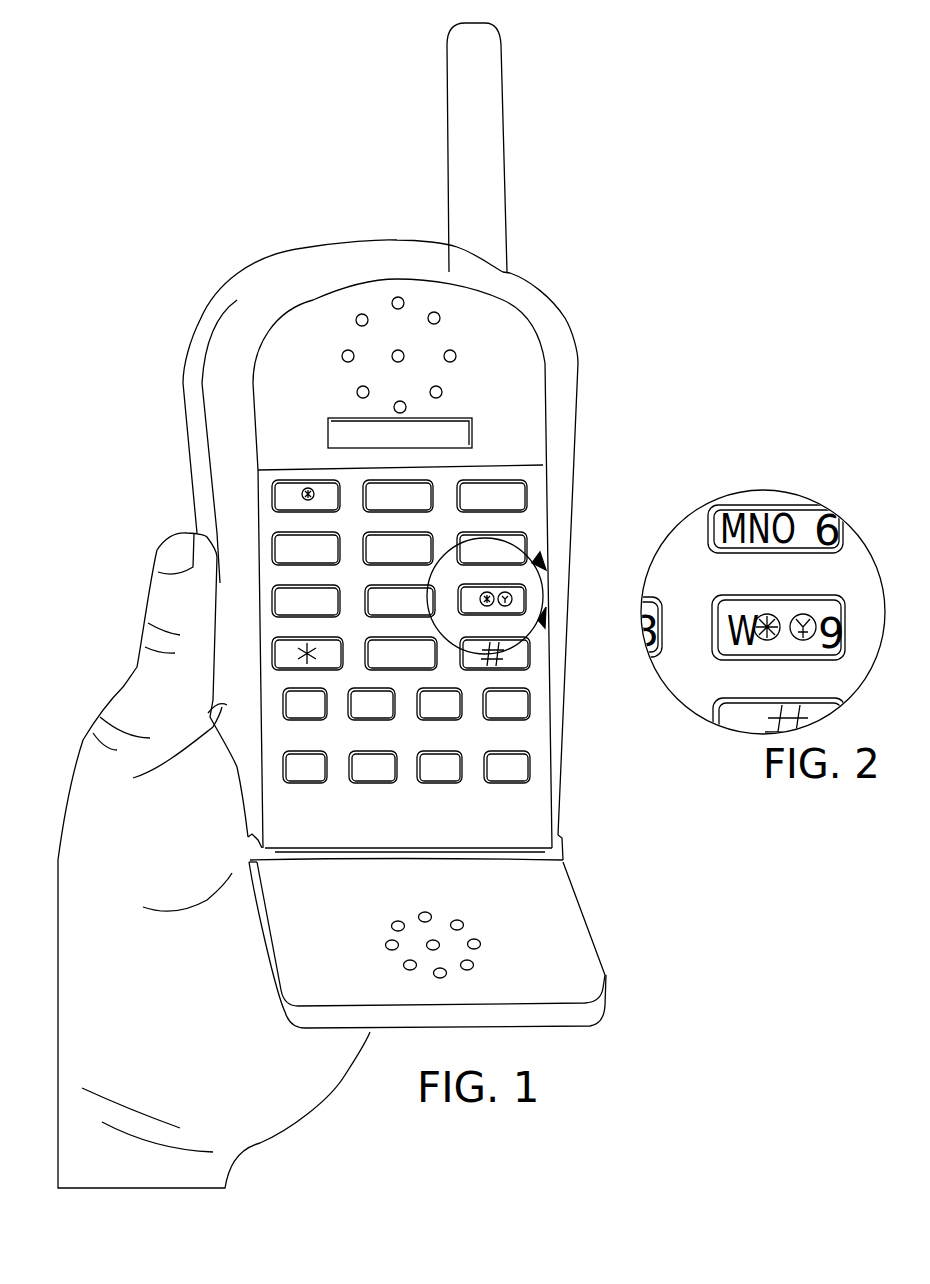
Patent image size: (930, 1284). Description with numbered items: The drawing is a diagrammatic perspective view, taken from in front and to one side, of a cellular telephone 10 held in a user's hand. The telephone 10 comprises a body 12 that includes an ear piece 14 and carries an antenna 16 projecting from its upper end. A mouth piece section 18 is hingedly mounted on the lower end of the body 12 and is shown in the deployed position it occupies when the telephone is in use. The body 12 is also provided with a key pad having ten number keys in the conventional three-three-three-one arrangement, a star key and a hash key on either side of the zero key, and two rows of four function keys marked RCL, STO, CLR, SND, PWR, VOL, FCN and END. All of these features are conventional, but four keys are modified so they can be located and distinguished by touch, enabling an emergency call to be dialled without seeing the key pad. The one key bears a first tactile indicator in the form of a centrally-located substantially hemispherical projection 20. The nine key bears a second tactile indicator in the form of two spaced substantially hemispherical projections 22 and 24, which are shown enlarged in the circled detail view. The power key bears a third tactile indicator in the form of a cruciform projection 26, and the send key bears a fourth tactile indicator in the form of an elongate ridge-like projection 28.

In FIG. 1, the cellular telephone 10 is at (697, 62).
In FIG. 1, the body 12 is at (547, 320).
In FIG. 1, the ear piece 14 is at (408, 345).
In FIG. 1, the antenna 16 is at (485, 90).
In FIG. 1, the mouth piece section 18 is at (437, 945).
In FIG. 1, the substantially hemispherical projection 20 is at (307, 493).
In FIG. 1, the substantially hemispherical projection 22 is at (490, 592).
In FIG. 2, the substantially hemispherical projection 22 is at (763, 613).
In FIG. 1, the substantially hemispherical projection 24 is at (508, 604).
In FIG. 2, the substantially hemispherical projection 24 is at (803, 614).
In FIG. 1, the cruciform projection 26 is at (287, 767).
In FIG. 1, the elongate ridge-like projection 28 is at (510, 707).